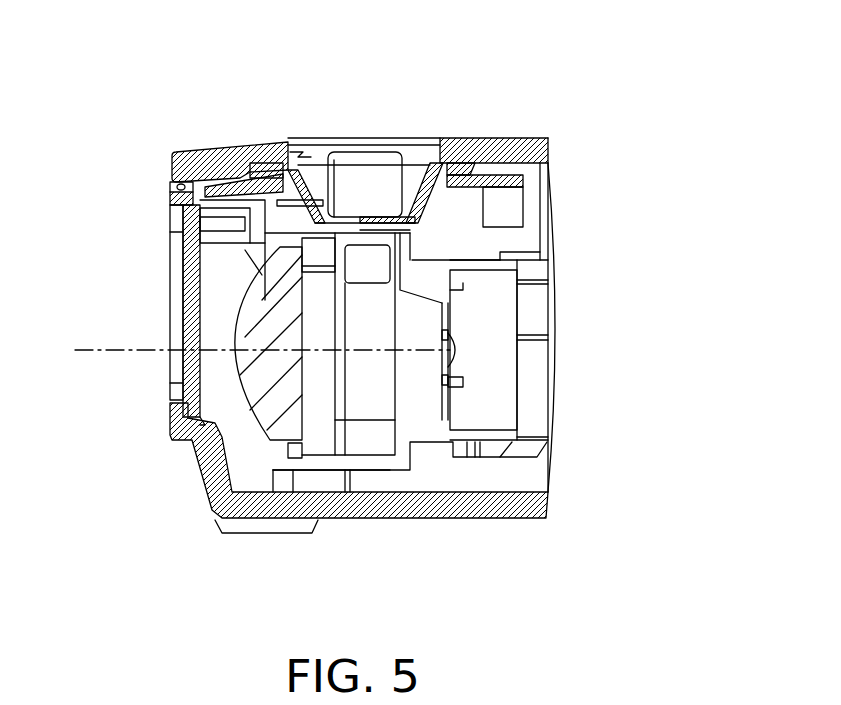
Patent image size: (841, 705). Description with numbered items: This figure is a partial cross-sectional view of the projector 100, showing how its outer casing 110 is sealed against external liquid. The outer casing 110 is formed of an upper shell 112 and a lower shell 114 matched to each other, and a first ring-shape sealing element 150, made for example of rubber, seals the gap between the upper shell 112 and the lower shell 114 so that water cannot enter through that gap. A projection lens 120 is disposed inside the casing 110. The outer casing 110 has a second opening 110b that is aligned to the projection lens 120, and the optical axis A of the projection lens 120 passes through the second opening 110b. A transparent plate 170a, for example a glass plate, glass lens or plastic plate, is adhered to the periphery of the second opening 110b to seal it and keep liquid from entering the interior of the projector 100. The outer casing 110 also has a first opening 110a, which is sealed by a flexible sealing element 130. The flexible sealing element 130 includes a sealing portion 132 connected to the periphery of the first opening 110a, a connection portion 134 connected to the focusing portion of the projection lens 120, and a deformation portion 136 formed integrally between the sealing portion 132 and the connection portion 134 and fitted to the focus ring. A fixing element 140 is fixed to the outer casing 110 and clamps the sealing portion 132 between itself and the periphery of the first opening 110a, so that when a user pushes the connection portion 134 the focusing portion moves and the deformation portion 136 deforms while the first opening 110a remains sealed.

The projector 100 is at (637, 105).
The outer casing 110 is at (680, 293).
The upper shell 112 is at (548, 153).
The lower shell 114 is at (550, 512).
The first opening 110a is at (312, 148).
The second opening 110b is at (182, 200).
The projection lens 120 is at (272, 410).
The flexible sealing element 130 is at (452, 47).
The sealing portion 132 is at (462, 165).
The connection portion 134 is at (358, 152).
The deformation portion 136 is at (418, 188).
The fixing element 140 is at (480, 150).
The first ring-shape sealing element 150 is at (188, 150).
The transparent plate 170a is at (175, 257).
The optical axis A is at (97, 348).